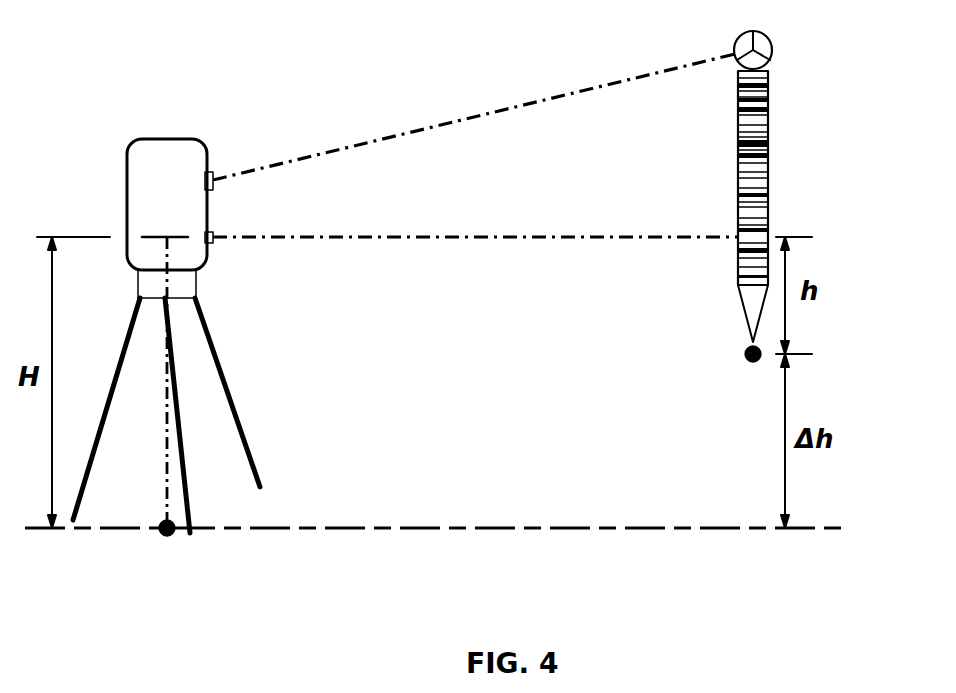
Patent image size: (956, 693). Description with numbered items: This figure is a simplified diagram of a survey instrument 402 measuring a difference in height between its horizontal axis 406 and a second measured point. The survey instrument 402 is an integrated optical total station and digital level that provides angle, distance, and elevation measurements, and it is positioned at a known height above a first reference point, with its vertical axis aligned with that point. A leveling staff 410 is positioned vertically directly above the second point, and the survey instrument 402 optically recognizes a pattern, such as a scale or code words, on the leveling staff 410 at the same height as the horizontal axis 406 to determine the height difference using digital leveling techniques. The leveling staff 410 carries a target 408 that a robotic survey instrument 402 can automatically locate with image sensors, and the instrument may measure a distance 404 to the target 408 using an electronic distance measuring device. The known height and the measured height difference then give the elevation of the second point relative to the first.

The survey instrument 402 is at (130, 142).
The distance 404 is at (413, 132).
The horizontal axis 406 is at (420, 238).
The target 408 is at (769, 37).
The leveling staff 410 is at (768, 143).